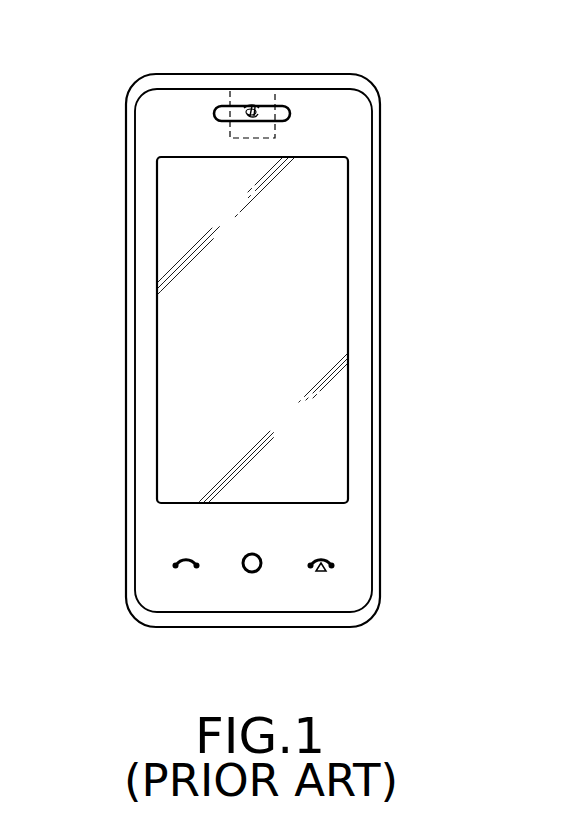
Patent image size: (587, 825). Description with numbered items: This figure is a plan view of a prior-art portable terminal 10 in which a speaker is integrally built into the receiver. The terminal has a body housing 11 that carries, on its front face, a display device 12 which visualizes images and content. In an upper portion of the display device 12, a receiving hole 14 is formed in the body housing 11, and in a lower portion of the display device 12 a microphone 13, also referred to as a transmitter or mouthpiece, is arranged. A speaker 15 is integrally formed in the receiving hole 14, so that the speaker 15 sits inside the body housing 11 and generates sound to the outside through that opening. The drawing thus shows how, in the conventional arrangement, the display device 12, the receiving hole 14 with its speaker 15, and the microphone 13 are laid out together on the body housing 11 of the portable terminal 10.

The portable terminal 10 is at (75, 50).
The body housing 11 is at (362, 308).
The display device 12 is at (318, 237).
The microphone 13 is at (253, 573).
The receiving hole 14 is at (290, 113).
The speaker 15 is at (251, 99).